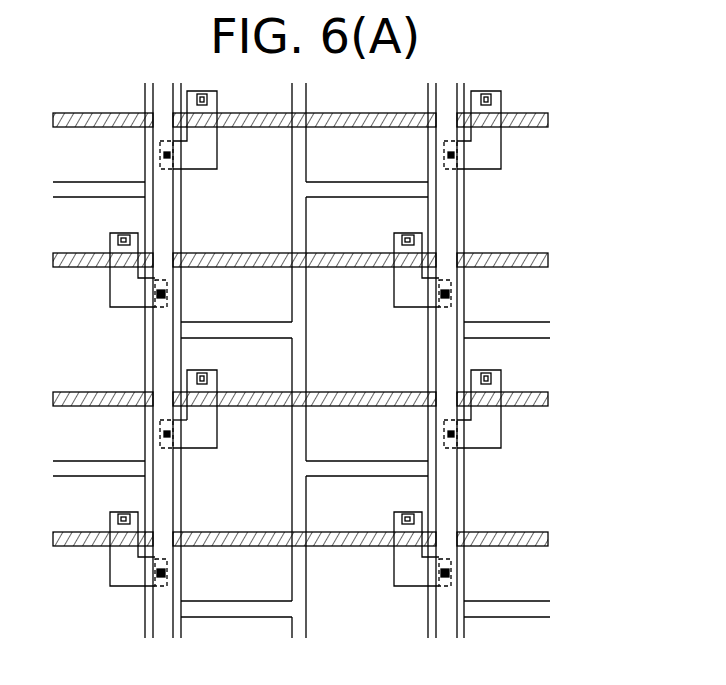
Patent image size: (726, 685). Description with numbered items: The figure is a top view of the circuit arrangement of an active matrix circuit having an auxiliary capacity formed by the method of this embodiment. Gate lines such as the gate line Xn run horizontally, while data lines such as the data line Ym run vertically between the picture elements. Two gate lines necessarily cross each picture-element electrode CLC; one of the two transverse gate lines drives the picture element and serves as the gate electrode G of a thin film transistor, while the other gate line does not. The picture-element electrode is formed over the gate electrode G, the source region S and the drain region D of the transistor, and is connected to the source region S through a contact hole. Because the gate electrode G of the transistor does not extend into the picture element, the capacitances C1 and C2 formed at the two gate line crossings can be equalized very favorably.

The gate line Xn is at (324, 126).
The data line Ym is at (161, 384).
The capacitance C1 is at (320, 268).
The capacitance C2 is at (393, 388).
The picture-element electrode CLC is at (323, 452).
The source region S is at (216, 379).
The gate electrode G is at (227, 407).
The drain region D is at (200, 438).